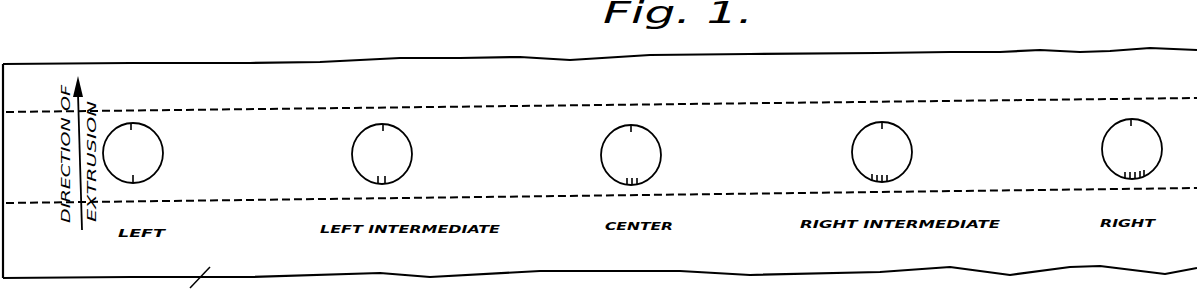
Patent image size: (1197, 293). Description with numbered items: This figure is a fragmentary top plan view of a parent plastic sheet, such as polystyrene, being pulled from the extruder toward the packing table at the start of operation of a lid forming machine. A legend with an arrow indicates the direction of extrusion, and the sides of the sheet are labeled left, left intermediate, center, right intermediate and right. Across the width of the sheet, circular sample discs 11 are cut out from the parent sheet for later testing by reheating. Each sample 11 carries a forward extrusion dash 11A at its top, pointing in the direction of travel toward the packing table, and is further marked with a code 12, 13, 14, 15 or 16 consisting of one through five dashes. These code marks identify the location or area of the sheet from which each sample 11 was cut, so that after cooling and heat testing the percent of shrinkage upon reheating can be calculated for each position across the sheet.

The sample 11 is at (163, 158).
The forward extrusion dash 11A is at (125, 123).
The code 12 is at (133, 180).
The code 13 is at (390, 177).
The code 14 is at (643, 178).
The code 15 is at (893, 177).
The code 16 is at (1125, 168).